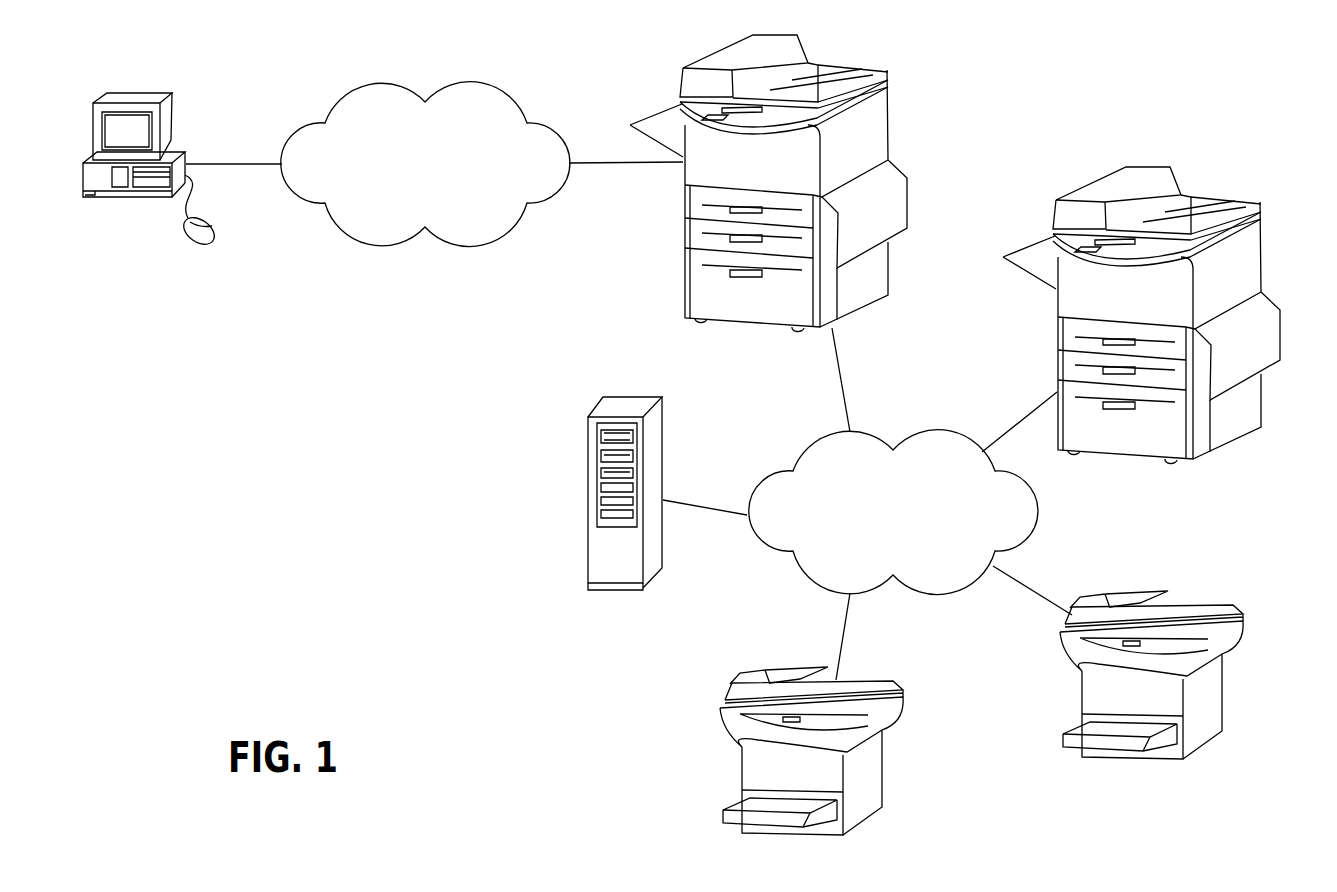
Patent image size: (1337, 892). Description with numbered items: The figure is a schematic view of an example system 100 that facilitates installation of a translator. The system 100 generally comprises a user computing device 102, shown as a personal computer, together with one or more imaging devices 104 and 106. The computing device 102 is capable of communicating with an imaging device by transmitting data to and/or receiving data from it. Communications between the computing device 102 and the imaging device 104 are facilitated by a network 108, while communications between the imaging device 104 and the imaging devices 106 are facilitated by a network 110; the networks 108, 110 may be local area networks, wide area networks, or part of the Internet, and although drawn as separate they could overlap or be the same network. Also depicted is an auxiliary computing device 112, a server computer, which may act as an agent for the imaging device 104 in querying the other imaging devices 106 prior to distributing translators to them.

The system 100 is at (1222, 78).
The user computing device 102 is at (167, 118).
The imaging device 104 is at (883, 142).
The imaging devices 106 is at (1227, 420).
The network 108 is at (443, 187).
The network 110 is at (911, 535).
The auxiliary computing device 112 is at (602, 555).